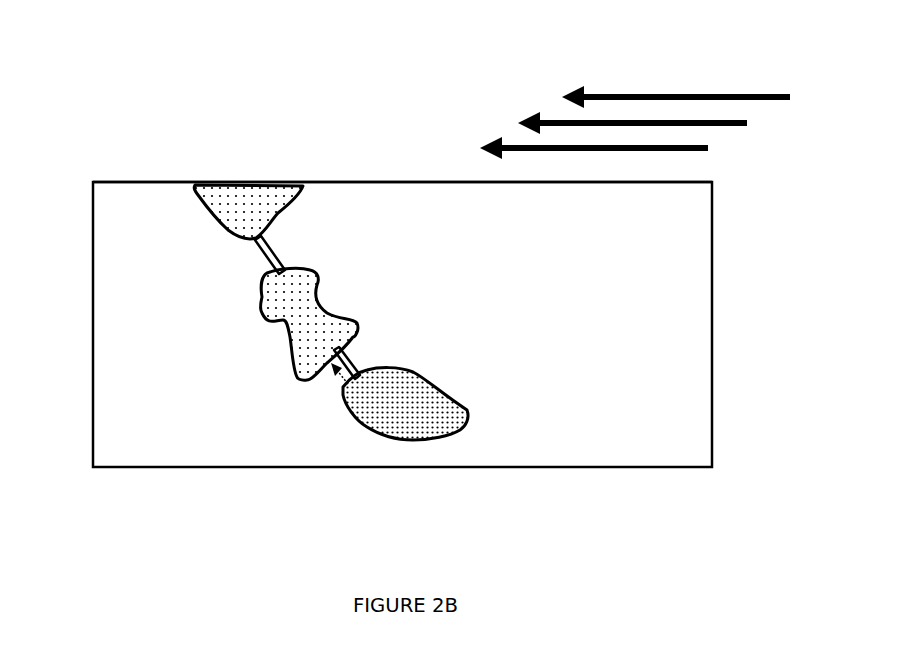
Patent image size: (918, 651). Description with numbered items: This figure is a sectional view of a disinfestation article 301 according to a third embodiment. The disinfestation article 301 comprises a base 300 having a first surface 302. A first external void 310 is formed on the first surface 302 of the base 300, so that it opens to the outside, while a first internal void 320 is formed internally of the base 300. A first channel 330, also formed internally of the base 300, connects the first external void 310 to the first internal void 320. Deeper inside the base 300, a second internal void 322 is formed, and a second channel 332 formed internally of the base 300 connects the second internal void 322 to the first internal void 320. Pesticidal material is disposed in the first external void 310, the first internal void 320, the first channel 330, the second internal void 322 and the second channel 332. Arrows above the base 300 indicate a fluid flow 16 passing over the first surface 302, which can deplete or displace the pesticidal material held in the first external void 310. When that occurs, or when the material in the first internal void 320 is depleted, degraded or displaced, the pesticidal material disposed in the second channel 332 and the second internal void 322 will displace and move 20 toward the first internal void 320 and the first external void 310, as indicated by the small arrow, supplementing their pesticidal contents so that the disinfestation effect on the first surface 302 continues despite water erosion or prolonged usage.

The disinfestation article 301 is at (149, 65).
The base 300 is at (135, 200).
The first surface 302 is at (447, 181).
The fluid flow 16 is at (657, 93).
The first external void 310 is at (228, 182).
The first channel 330 is at (263, 255).
The first internal void 320 is at (268, 313).
The second channel 332 is at (362, 365).
The second internal void 322 is at (397, 427).
The displacement and movement of pesticidal material 20 is at (338, 375).